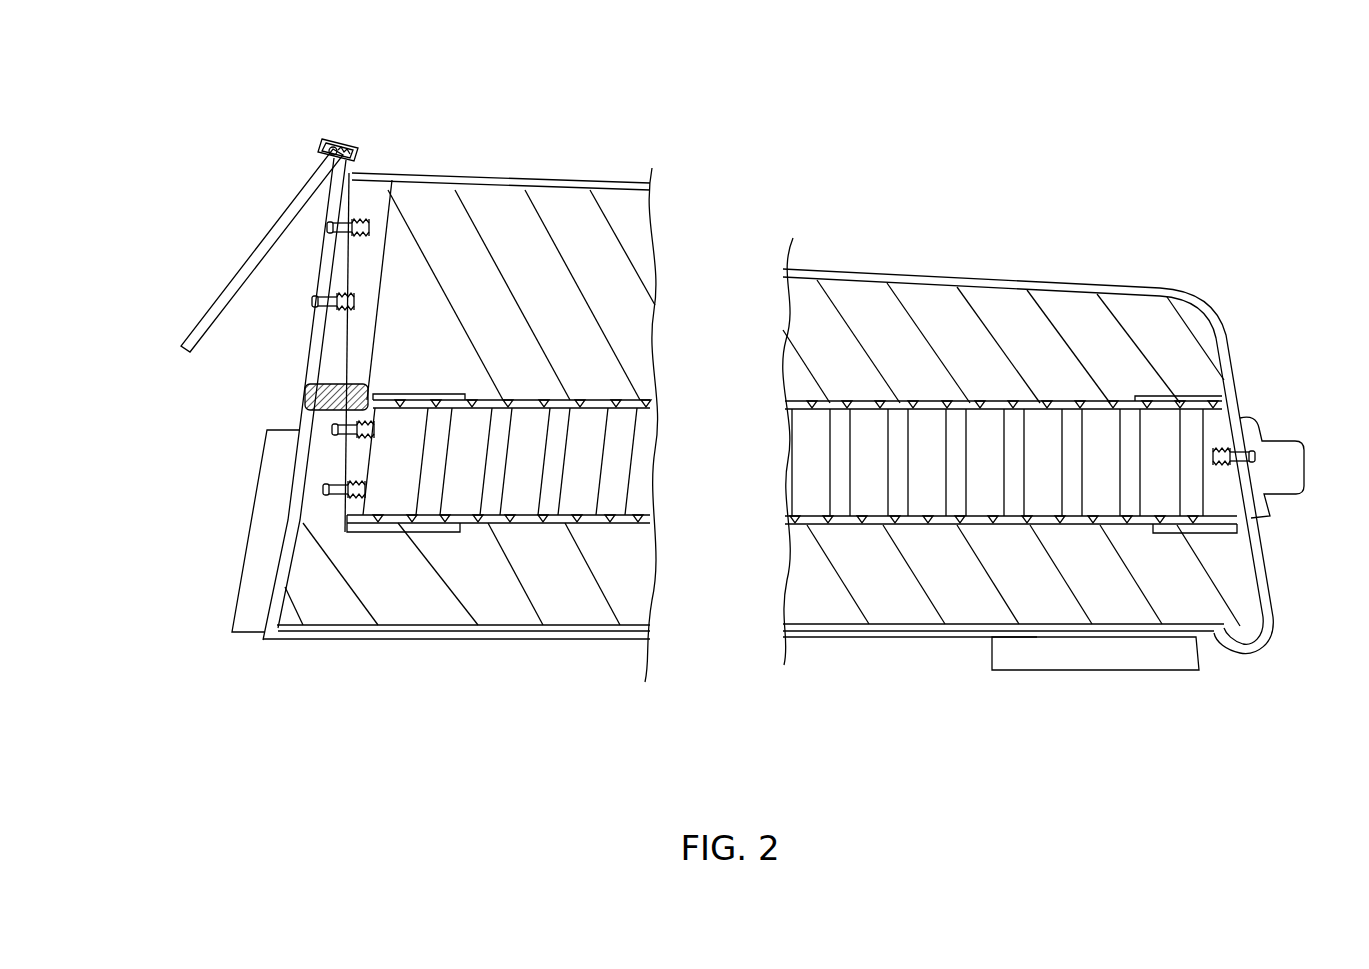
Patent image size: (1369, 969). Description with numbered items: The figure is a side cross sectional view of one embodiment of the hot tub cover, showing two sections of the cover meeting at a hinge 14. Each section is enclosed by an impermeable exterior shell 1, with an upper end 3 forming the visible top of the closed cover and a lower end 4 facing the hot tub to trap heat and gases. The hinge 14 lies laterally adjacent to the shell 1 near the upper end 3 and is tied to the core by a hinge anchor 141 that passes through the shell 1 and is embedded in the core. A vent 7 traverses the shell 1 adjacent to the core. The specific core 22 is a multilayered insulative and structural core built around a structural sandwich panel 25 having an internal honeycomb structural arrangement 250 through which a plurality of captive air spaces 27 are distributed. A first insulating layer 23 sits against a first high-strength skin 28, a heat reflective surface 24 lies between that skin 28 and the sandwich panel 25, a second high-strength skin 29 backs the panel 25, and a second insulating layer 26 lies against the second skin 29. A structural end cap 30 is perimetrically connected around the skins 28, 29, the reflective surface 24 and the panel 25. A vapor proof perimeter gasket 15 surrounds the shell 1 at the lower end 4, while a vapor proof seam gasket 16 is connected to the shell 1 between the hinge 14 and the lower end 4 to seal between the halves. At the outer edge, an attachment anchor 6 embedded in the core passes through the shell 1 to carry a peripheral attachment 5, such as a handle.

The impermeable exterior shell 1 is at (1223, 348).
The upper end 3 is at (501, 373).
The lower end 4 is at (399, 676).
The peripheral attachment 5 is at (1318, 441).
The attachment anchor 6 is at (1254, 434).
The vent 7 is at (306, 384).
The hinge 14 is at (287, 172).
The hinge anchor 141 is at (303, 340).
The vapor proof perimeter gasket 15 is at (1077, 664).
The vapor proof seam gasket 16 is at (263, 494).
The specific core 22 is at (746, 263).
The first insulating layer 23 is at (538, 198).
The heat reflective surface 24 is at (597, 410).
The structural sandwich panel 25 is at (536, 443).
The second insulating layer 26 is at (615, 559).
The captive air spaces 27 is at (418, 476).
The first high-strength skin 28 is at (599, 403).
The second high-strength skin 29 is at (529, 524).
The structural end cap 30 is at (445, 394).
The internal honeycomb structural arrangement 250 is at (538, 420).